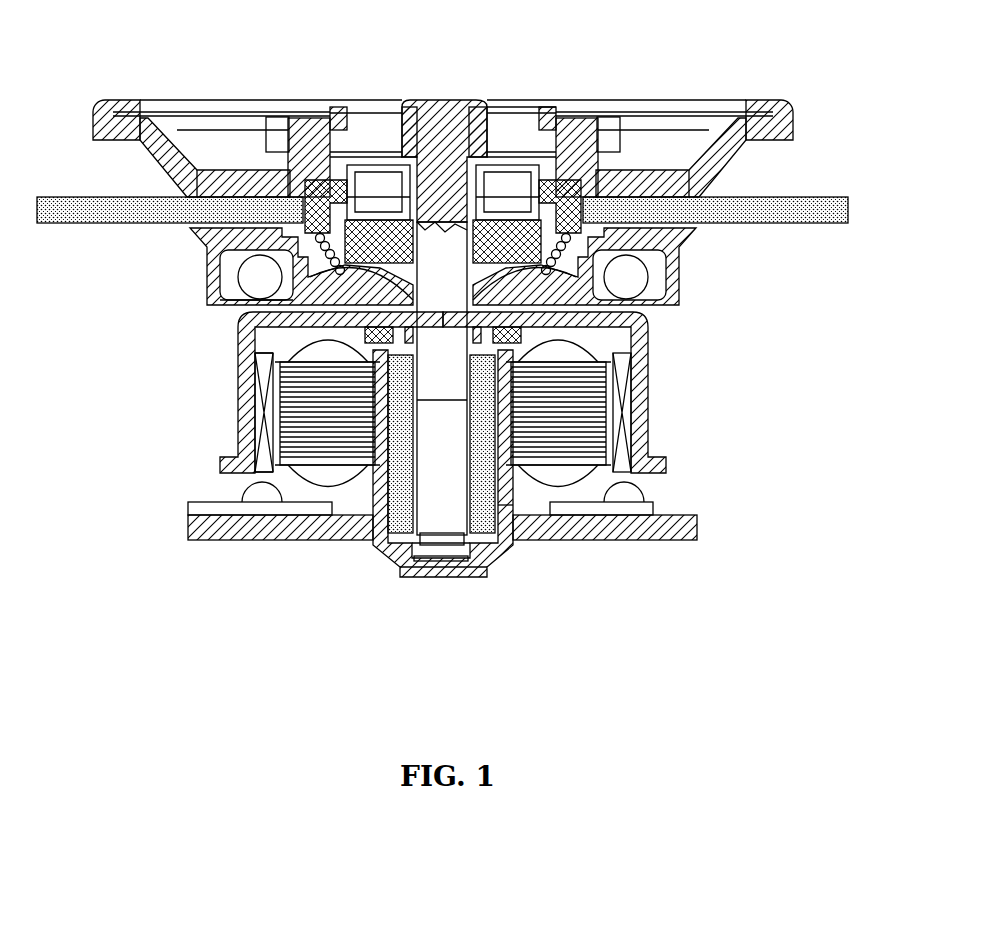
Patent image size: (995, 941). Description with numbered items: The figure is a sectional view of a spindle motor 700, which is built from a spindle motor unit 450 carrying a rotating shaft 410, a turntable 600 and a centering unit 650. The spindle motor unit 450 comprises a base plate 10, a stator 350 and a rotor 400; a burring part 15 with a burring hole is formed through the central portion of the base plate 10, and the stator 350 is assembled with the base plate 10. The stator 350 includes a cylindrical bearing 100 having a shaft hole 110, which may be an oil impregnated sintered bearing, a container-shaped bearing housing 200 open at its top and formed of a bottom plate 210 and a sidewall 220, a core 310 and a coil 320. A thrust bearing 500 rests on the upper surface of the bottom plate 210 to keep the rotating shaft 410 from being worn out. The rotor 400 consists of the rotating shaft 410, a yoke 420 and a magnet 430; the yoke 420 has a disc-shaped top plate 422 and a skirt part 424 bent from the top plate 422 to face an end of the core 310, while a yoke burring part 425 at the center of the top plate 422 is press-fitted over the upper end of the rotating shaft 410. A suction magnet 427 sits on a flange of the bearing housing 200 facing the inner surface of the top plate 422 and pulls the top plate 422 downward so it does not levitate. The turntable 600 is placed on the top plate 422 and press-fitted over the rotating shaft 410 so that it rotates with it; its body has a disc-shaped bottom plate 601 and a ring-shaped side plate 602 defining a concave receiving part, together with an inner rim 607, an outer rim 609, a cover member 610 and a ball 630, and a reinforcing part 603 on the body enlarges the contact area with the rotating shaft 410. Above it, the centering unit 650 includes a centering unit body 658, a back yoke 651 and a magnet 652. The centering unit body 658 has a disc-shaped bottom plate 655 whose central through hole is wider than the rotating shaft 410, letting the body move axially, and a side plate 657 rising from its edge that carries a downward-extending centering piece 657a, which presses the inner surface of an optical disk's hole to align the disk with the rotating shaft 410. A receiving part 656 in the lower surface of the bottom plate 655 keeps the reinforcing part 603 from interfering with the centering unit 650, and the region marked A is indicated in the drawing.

The base plate 10 is at (698, 527).
The burring part 15 is at (513, 504).
The bearing 100 is at (372, 520).
The shaft hole 110 is at (484, 505).
The bearing housing 200 is at (397, 663).
The bottom plate 210 is at (407, 573).
The sidewall 220 is at (372, 540).
The core 310 is at (602, 430).
The coil 320 is at (600, 477).
The stator 350 is at (614, 412).
The rotor 400 is at (655, 382).
The rotating shaft 410 is at (448, 100).
The yoke 420 is at (230, 370).
The top plate 422 is at (270, 302).
The skirt part 424 is at (268, 400).
The yoke burring part 425 is at (282, 290).
The suction magnet 427 is at (328, 332).
The magnet 430 is at (264, 441).
The spindle motor unit 450 is at (768, 365).
The thrust bearing 500 is at (445, 565).
The turntable 600 is at (703, 256).
The bottom plate 601 is at (641, 125).
The side plate 602 is at (677, 197).
The reinforcing part 603 is at (520, 158).
The inner rim 607 is at (696, 135).
The outer rim 609 is at (665, 292).
The cover member 610 is at (500, 293).
The ball 630 is at (642, 272).
The centering unit 650 is at (497, 165).
The back yoke 651 is at (392, 200).
The magnet 652 is at (392, 165).
The bottom plate 655 is at (378, 168).
The receiving part 656 is at (482, 218).
The side plate 657 is at (303, 135).
The centering piece 657a is at (305, 212).
The centering unit body 658 is at (385, 47).
The spindle motor 700 is at (753, 82).
The region A is at (617, 352).